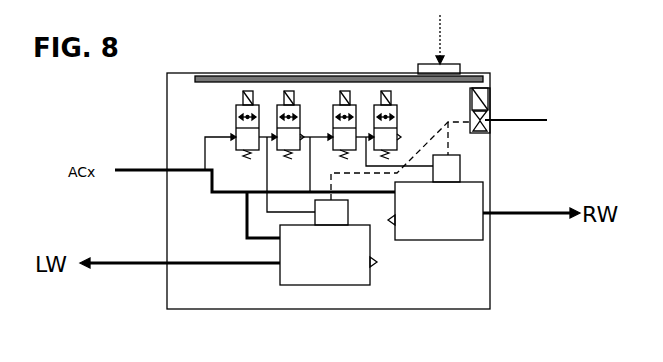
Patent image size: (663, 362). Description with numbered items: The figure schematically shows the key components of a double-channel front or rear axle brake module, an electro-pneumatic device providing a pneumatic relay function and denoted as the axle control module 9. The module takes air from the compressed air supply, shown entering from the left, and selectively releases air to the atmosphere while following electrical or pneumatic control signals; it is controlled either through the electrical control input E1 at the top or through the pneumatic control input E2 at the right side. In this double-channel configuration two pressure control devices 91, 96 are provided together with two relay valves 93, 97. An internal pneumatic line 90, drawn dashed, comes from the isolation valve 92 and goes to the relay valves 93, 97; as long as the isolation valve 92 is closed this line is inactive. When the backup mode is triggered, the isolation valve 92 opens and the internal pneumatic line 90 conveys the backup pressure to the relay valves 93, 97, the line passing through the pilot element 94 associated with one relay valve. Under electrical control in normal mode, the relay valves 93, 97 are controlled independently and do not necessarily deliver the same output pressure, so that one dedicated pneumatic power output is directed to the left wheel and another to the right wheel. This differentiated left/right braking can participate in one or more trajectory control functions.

The axle control module 9 is at (222, 47).
The pressure control device 96 is at (272, 100).
The pressure control device 91 is at (362, 103).
The internal pneumatic line 90 is at (433, 135).
The electrical control input E1 is at (449, 60).
The isolation valve 92 is at (490, 103).
The pneumatic control input E2 is at (490, 124).
The pilot chamber 94 is at (458, 168).
The relay valve 93 is at (458, 226).
The relay valve 97 is at (338, 284).